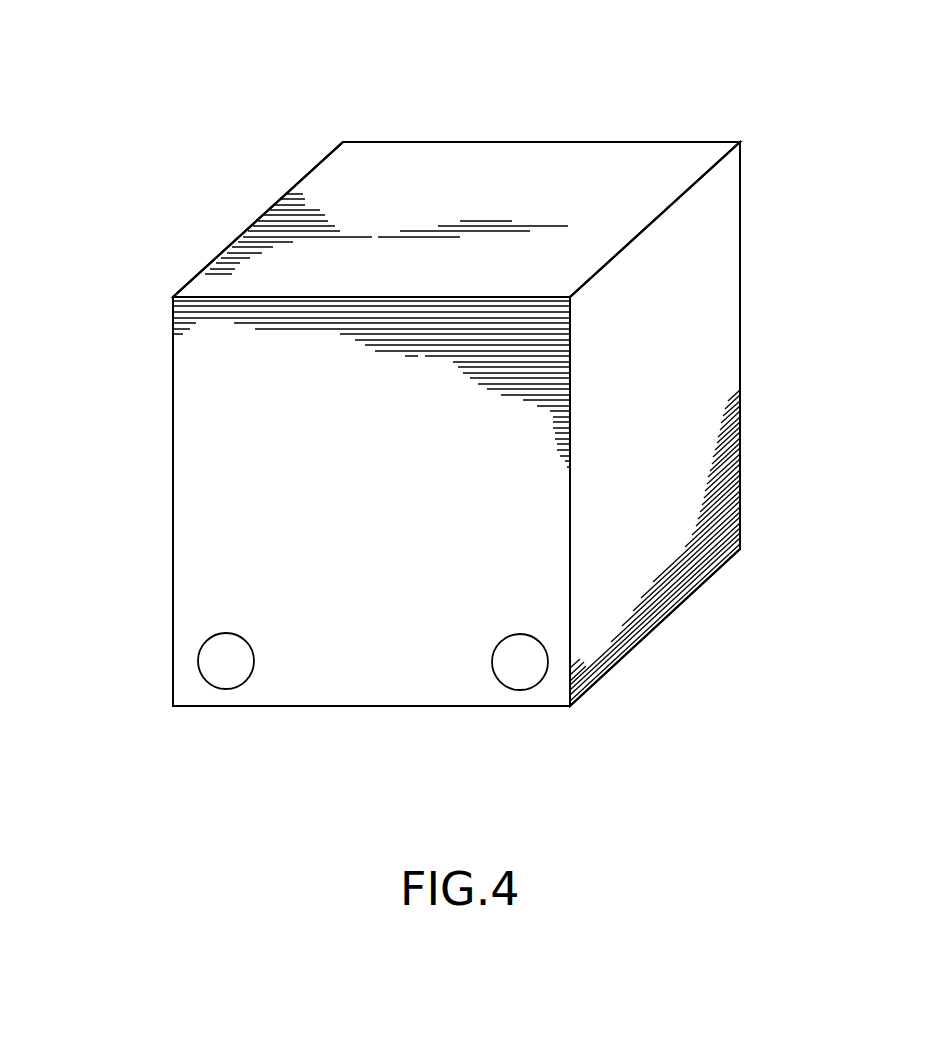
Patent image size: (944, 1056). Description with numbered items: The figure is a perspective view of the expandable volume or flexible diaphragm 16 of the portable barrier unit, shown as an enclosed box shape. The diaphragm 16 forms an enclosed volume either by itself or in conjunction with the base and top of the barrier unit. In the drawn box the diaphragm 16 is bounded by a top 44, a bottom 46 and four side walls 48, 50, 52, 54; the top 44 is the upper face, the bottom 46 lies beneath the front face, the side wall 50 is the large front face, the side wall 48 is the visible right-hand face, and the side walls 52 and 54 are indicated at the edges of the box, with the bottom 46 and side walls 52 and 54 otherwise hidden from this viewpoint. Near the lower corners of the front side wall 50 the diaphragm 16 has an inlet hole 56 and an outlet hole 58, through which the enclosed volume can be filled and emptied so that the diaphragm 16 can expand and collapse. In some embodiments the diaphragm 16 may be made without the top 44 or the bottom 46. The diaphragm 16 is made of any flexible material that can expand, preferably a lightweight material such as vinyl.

The flexible diaphragm 16 is at (70, 434).
The top 44 is at (524, 193).
The bottom 46 is at (420, 722).
The side wall 48 is at (682, 382).
The side wall 50 is at (203, 538).
The side wall 52 is at (240, 225).
The side wall 54 is at (460, 135).
The inlet hole 56 is at (527, 688).
The outlet hole 58 is at (220, 688).